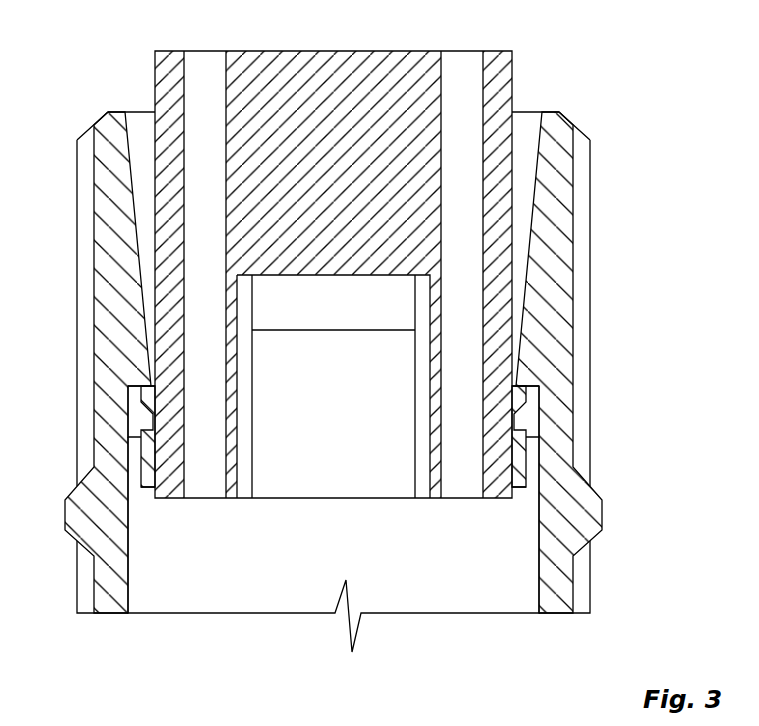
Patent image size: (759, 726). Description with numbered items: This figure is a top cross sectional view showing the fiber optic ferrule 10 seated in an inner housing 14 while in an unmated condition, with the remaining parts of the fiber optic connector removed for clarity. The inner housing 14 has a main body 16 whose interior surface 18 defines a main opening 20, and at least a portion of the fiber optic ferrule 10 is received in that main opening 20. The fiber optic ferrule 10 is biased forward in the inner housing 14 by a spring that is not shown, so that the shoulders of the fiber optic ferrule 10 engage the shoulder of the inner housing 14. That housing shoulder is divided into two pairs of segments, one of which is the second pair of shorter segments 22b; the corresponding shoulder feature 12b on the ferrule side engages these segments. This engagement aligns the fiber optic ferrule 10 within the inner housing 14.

The fiber optic ferrule 10 is at (430, 50).
The inner housing 14 is at (94, 178).
The main body 16 is at (105, 348).
The shorter segments 22b is at (522, 390).
The groove 12b is at (528, 402).
The main opening 20 is at (505, 548).
The interior surface 18 is at (496, 600).